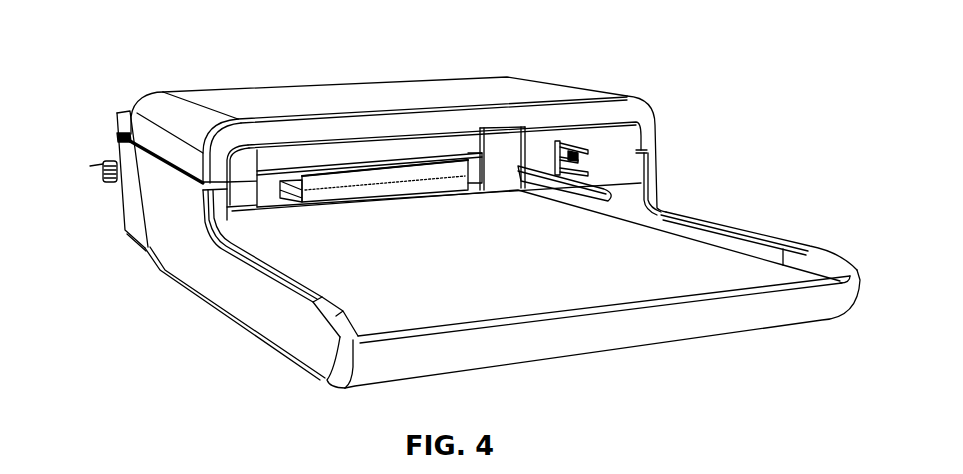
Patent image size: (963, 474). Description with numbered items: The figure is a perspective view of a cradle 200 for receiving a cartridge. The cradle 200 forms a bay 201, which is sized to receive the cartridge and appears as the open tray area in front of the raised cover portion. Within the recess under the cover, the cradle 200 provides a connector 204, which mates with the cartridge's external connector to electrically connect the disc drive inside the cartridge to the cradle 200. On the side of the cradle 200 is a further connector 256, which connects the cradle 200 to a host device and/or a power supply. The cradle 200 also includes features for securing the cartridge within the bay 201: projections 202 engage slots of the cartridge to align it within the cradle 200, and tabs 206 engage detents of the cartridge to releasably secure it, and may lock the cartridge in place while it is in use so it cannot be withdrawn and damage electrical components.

The cradle 200 is at (122, 78).
The bay 201 is at (417, 232).
The projections 202 is at (614, 196).
The connector 204 is at (398, 165).
The tabs 206 is at (575, 159).
The connector 256 is at (102, 166).